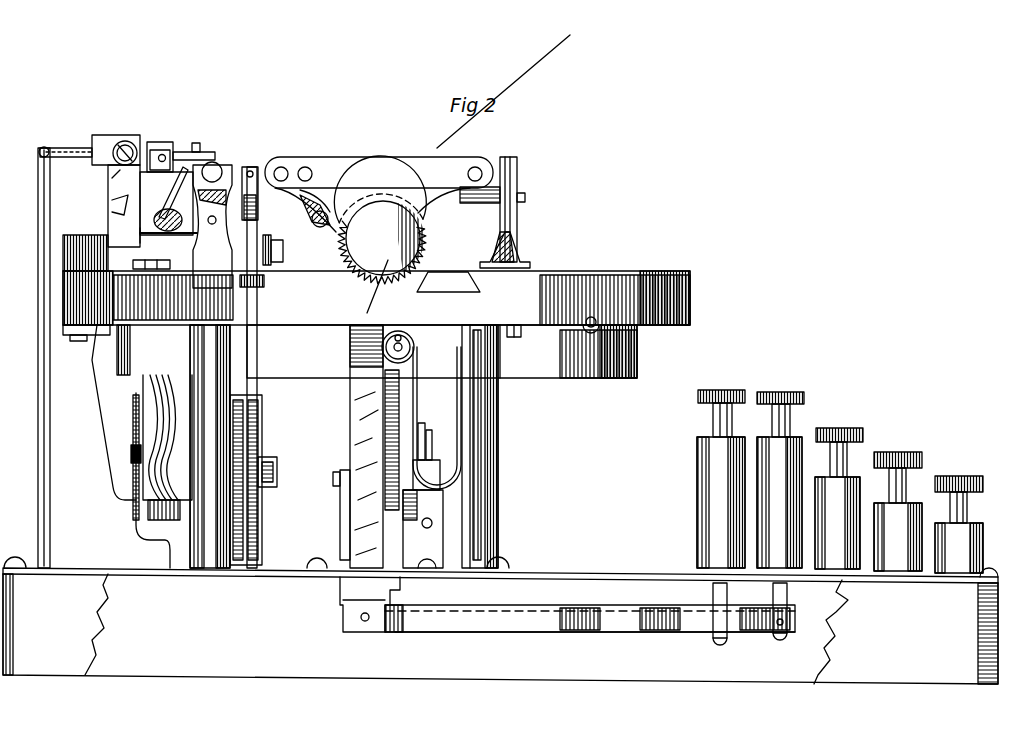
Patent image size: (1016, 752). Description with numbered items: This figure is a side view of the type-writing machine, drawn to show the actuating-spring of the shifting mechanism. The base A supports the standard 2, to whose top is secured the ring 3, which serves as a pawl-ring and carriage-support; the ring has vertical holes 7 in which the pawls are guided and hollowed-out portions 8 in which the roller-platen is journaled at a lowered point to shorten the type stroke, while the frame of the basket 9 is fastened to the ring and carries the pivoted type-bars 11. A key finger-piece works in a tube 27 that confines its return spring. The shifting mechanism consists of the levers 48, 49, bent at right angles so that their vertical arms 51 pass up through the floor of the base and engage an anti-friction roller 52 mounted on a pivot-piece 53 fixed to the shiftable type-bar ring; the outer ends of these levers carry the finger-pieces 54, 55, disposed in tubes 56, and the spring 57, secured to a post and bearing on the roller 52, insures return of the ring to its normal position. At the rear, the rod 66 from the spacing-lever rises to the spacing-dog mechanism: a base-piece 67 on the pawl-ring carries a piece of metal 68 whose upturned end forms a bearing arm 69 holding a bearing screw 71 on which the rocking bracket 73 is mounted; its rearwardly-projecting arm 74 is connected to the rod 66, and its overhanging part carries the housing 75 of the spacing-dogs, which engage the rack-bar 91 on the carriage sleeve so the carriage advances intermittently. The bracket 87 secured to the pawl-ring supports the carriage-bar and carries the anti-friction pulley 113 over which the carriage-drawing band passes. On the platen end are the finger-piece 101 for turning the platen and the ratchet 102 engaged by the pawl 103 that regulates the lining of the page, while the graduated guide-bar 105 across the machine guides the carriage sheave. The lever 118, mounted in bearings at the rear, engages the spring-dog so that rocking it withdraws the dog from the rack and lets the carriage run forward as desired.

The base A is at (80, 600).
The standard 2 is at (480, 446).
The ring 3 is at (376, 324).
The vertical holes 7 is at (212, 540).
The hollowed-out portions 8 is at (355, 282).
The frame of the basket 9 is at (97, 390).
The type-bars 11 is at (163, 455).
The tube 27 is at (910, 520).
The lever 48 is at (582, 618).
The lever 49 is at (603, 633).
The vertical arms 51 is at (358, 446).
The anti-friction roller 52 is at (410, 348).
The pivot-piece 53 is at (405, 340).
The finger-piece 54 is at (713, 418).
The finger-piece 55 is at (775, 421).
The tubes 56 is at (749, 502).
The spring 57 is at (418, 398).
The rod 66 is at (38, 416).
The base-piece 67 is at (116, 253).
The piece of metal 68 is at (134, 204).
The bearing arm 69 is at (124, 201).
The bearing screw 71 is at (122, 175).
The rocking bracket 73 is at (116, 179).
The rearwardly-projecting arm 74 is at (66, 149).
The housing 75 is at (165, 142).
The bracket 87 is at (212, 225).
The rack-bar 91 is at (203, 150).
The finger-piece 101 is at (389, 287).
The ratchet 102 is at (415, 268).
The pawl 103 is at (330, 240).
The guide-bar 105 is at (520, 255).
The anti-friction pulley 113 is at (274, 367).
The lever 118 is at (168, 205).